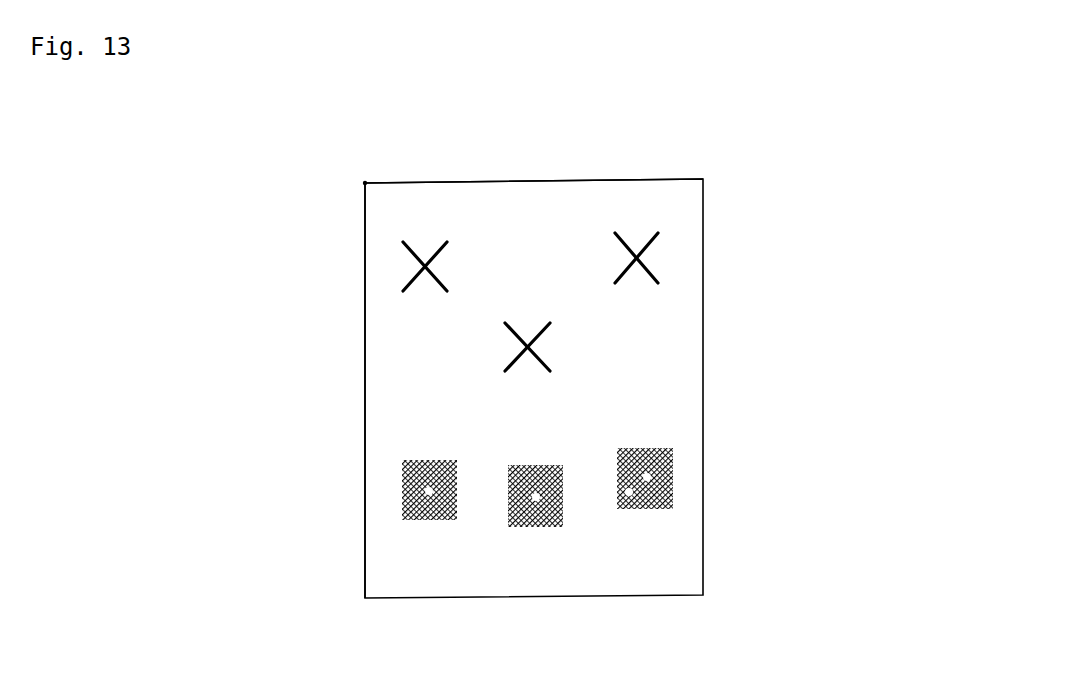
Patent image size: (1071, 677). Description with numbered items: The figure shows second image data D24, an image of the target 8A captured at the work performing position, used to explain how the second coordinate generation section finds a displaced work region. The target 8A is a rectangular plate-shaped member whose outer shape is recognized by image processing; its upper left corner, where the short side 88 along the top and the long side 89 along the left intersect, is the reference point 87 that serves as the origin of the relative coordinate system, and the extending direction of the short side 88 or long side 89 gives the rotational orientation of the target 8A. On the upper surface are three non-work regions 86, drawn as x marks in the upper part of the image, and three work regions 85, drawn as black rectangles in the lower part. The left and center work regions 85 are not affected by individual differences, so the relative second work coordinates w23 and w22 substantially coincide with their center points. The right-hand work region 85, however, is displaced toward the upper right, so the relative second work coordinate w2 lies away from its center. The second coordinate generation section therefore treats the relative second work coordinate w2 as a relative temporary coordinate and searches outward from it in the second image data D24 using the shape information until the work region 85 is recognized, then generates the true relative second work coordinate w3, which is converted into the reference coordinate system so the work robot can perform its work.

The second image data D24 is at (599, 372).
The target 8A is at (688, 333).
The work region 85 is at (643, 538).
The non-work region 86 is at (643, 247).
The reference point 87 is at (365, 183).
The short side 88 is at (463, 182).
The long side 89 is at (365, 367).
The relative second work coordinate w2 is at (629, 492).
The true relative second work coordinate w3 is at (429, 491).
The relative second work coordinate w22 is at (536, 497).
The relative second work coordinate w23 is at (405, 558).